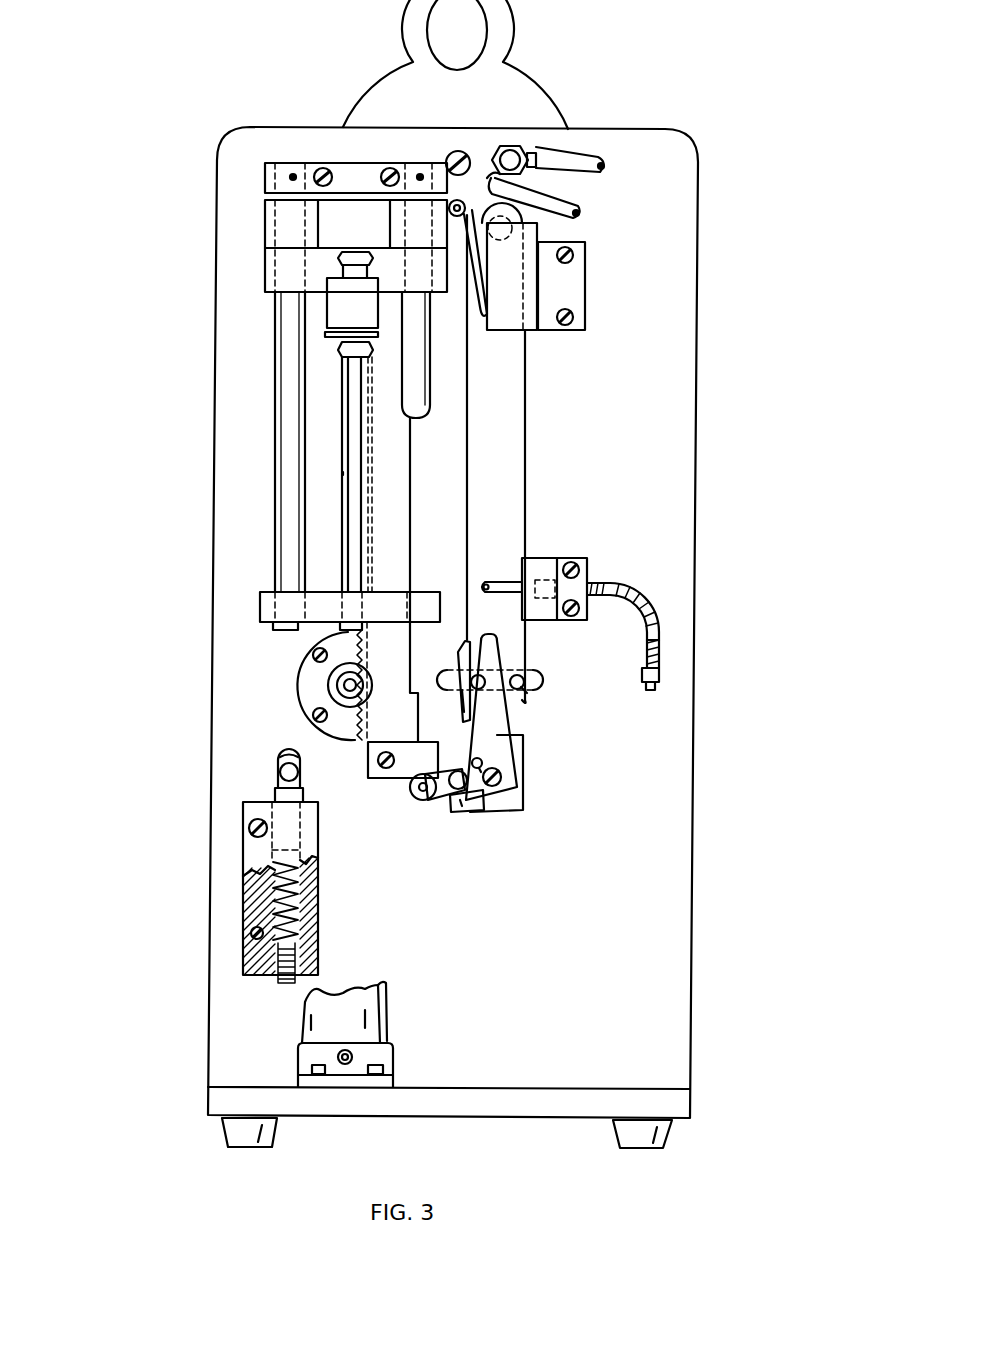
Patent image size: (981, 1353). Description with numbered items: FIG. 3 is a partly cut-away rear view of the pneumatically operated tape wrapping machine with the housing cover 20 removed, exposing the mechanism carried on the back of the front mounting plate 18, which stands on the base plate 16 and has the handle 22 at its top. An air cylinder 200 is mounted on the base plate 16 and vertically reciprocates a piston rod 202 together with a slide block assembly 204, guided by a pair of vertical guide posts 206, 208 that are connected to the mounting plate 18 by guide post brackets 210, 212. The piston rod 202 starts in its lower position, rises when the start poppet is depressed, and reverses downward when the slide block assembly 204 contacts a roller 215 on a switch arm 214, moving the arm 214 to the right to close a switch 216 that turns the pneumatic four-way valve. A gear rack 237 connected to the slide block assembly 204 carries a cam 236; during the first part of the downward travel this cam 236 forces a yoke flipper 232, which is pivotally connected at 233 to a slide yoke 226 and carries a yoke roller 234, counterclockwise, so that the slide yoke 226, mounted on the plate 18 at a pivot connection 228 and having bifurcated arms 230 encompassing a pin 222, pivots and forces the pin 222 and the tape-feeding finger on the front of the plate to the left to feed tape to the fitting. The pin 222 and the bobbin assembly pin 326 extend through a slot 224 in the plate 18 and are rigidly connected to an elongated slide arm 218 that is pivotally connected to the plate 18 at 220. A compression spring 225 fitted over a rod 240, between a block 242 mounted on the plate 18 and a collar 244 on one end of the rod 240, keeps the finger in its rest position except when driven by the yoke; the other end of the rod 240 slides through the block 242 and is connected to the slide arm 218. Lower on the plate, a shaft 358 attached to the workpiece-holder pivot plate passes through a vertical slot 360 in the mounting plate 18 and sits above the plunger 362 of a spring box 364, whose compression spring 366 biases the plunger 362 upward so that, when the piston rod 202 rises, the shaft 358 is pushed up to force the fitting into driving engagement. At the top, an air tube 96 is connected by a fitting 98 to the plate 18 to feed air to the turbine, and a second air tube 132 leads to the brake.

The base plate 16 is at (541, 1112).
The front mounting plate 18 is at (698, 296).
The housing cover 20 is at (341, 422).
The handle 22 is at (483, 30).
The air tube 96 is at (582, 206).
The fitting 98 is at (487, 176).
The air tube 132 is at (600, 154).
The air cylinder 200 is at (388, 1012).
The piston rod 202 is at (343, 472).
The slide block assembly 204 is at (265, 213).
The vertical guide post 206 is at (280, 418).
The vertical guide post 208 is at (425, 412).
The guide post bracket 210 is at (265, 182).
The guide post bracket 212 is at (262, 607).
The switch arm 214 is at (470, 255).
The roller 215 is at (447, 216).
The switch 216 is at (508, 318).
The slide arm 218 is at (518, 462).
The pivot connection 220 is at (528, 221).
The pin 222 is at (464, 690).
The slot 224 is at (545, 684).
The compression spring 225 is at (660, 648).
The slide yoke 226 is at (511, 724).
The pivot connection 228 is at (503, 783).
The bifurcated arms 230 is at (459, 651).
The yoke flipper 232 is at (437, 796).
The pivot connection 233 is at (462, 800).
The yoke roller 234 is at (414, 796).
The cam 236 is at (415, 740).
The gear rack 237 is at (398, 560).
The rod 240 is at (640, 597).
The block 242 is at (545, 565).
The collar 244 is at (660, 675).
The pin 326 is at (522, 688).
The shaft 358 is at (278, 772).
The vertical slot 360 is at (280, 755).
The plunger 362 is at (303, 795).
The spring box 364 is at (324, 926).
The compression spring 366 is at (314, 876).